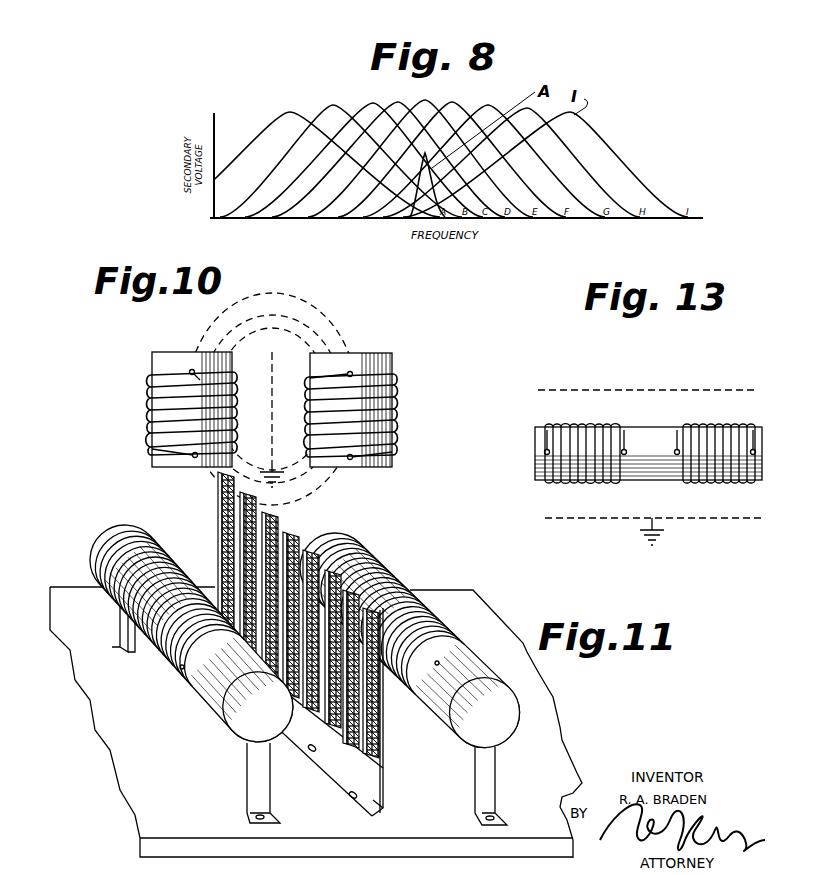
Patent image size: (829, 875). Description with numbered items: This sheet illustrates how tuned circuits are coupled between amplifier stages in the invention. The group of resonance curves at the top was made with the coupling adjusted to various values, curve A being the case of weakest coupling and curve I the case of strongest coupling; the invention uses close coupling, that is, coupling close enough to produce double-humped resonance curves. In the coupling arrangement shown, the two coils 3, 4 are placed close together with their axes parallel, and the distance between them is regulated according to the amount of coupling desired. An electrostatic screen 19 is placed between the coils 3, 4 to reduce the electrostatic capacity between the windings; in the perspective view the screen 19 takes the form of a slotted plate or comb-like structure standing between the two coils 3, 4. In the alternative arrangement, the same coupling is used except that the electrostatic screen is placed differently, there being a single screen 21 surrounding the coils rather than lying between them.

In FIG. 10, the coil 3 is at (150, 407).
In FIG. 11, the coil 3 is at (177, 669).
In FIG. 10, the coil 4 is at (394, 420).
In FIG. 11, the coil 4 is at (400, 582).
In FIG. 10, the electrostatic screen 19 is at (274, 466).
In FIG. 11, the electrostatic screen 19 is at (383, 778).
In FIG. 13, the single screen 21 is at (735, 389).